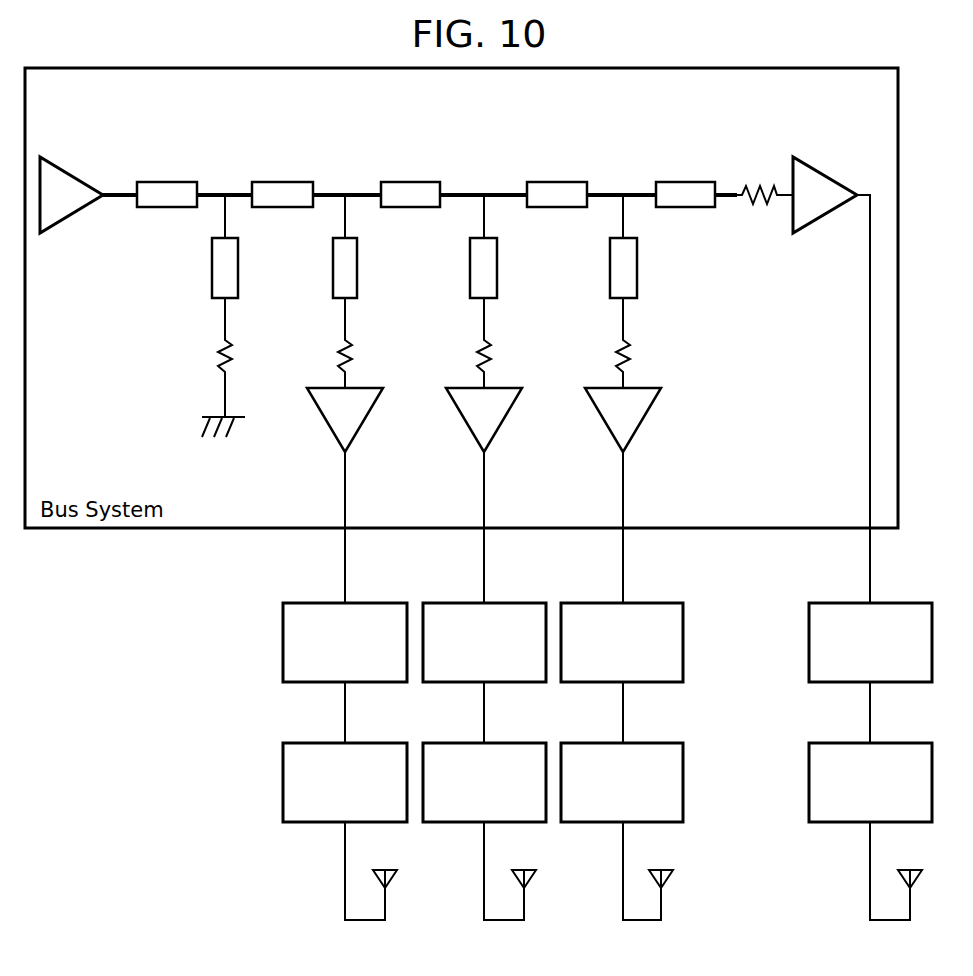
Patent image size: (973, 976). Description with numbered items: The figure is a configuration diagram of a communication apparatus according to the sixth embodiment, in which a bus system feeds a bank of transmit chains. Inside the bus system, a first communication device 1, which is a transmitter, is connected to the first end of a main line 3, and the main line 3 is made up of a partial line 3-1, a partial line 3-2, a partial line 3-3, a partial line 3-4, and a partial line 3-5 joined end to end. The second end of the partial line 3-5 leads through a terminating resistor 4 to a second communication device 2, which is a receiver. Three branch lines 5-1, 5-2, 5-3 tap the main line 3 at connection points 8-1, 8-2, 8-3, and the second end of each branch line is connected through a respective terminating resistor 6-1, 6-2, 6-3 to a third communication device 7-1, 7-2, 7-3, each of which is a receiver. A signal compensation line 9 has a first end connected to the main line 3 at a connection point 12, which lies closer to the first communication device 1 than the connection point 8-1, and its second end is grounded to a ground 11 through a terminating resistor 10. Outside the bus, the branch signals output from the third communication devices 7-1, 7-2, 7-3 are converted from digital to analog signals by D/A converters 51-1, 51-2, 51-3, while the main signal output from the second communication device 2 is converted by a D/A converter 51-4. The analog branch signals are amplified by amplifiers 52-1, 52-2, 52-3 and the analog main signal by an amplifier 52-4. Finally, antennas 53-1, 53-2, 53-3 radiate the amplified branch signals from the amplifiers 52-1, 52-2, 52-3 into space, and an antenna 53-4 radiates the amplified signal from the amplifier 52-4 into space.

The first communication device 1 is at (63, 170).
The second communication device 2 is at (826, 176).
The main line 3 is at (118, 190).
The partial line 3-1 is at (170, 182).
The partial line 3-2 is at (275, 182).
The partial line 3-3 is at (412, 182).
The partial line 3-4 is at (556, 182).
The partial line 3-5 is at (686, 182).
The terminating resistor 4 is at (758, 183).
The branch line 5-1 is at (333, 271).
The branch line 5-2 is at (470, 271).
The branch line 5-3 is at (610, 271).
The terminating resistor 6-1 is at (340, 342).
The terminating resistor 6-2 is at (480, 342).
The terminating resistor 6-3 is at (618, 342).
The third communication device 7-1 is at (326, 420).
The third communication device 7-2 is at (465, 420).
The third communication device 7-3 is at (604, 420).
The connection point 8-1 is at (345, 193).
The connection point 8-2 is at (484, 193).
The connection point 8-3 is at (622, 193).
The signal compensation line 9 is at (213, 239).
The terminating resistor 10 is at (218, 342).
The ground 11 is at (205, 425).
The connection point 12 is at (225, 193).
The D/A converter 51-1 is at (313, 603).
The D/A converter 51-2 is at (453, 603).
The D/A converter 51-3 is at (592, 603).
The D/A converter 51-4 is at (839, 603).
The amplifier 52-1 is at (313, 743).
The amplifier 52-2 is at (453, 743).
The amplifier 52-3 is at (592, 743).
The amplifier 52-4 is at (839, 743).
The antenna 53-1 is at (389, 870).
The antenna 53-2 is at (528, 870).
The antenna 53-3 is at (665, 870).
The antenna 53-4 is at (913, 870).